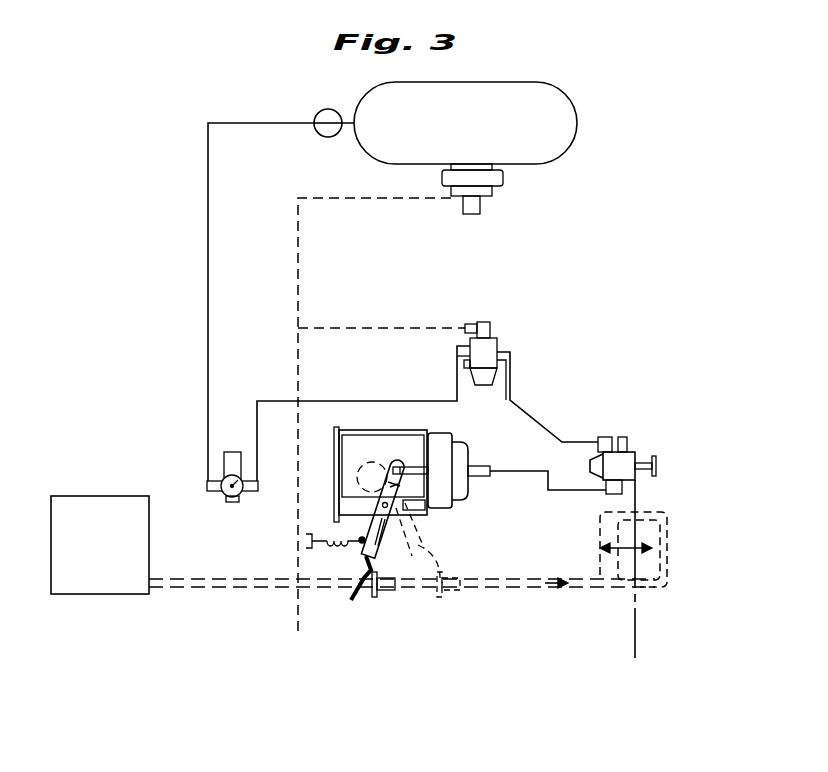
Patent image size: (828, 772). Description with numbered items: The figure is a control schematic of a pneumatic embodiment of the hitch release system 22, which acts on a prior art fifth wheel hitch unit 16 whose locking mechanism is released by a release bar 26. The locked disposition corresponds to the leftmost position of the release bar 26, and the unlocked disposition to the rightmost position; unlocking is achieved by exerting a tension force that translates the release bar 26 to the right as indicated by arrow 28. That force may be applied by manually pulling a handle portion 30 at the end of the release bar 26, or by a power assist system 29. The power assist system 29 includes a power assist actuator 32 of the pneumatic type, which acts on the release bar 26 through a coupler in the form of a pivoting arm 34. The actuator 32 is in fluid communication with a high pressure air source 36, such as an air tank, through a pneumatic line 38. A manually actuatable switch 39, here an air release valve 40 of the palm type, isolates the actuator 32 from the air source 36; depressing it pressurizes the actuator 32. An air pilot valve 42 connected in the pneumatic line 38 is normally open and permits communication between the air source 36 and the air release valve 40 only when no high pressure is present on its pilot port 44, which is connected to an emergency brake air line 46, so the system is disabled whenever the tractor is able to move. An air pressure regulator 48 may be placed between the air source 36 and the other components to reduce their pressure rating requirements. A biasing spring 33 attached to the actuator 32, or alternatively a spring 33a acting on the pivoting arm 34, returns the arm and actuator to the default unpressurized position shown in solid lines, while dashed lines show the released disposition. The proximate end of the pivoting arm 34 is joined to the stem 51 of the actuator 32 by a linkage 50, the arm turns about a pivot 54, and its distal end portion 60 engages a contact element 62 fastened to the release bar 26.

The hitch release system 22 is at (156, 94).
The fifth wheel hitch unit 16 is at (109, 560).
The arrow 28 is at (528, 592).
The pneumatic line 38 is at (208, 248).
The high pressure air source 36 is at (483, 136).
The emergency brake air line 46 is at (296, 618).
The pilot port 44 is at (470, 324).
The air pilot valve 42 is at (496, 343).
The air pressure regulator 48 is at (226, 498).
The power assist system 29 is at (384, 430).
The stem 51 is at (438, 432).
The power assist actuator 32 is at (443, 483).
The linkage 50 is at (398, 463).
The pivot 54 is at (370, 503).
The spring 33 is at (410, 507).
The distal end portion 60 is at (352, 602).
The spring 33a is at (329, 552).
The contact element 62 is at (384, 592).
The release bar 26 is at (452, 596).
The pivoting arm 34 is at (418, 545).
The manually actuatable switch 39 is at (663, 541).
The air release valve 40 is at (625, 460).
The handle portion 30 is at (655, 515).